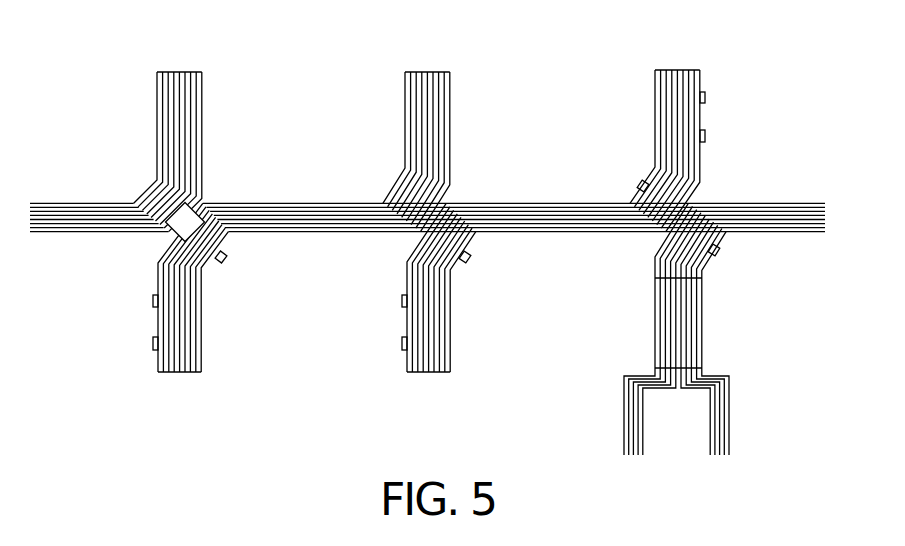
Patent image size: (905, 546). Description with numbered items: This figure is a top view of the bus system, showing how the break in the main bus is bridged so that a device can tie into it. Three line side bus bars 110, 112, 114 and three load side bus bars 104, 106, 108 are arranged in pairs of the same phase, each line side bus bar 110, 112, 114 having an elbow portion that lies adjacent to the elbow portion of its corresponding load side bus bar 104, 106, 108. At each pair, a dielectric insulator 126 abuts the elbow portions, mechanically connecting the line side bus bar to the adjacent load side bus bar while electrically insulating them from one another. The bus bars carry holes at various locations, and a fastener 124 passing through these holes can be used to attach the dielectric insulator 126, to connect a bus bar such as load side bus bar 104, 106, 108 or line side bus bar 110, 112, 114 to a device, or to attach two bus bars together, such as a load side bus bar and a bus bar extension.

The load side bus bar 104 is at (180, 374).
The load side bus bar 106 is at (418, 375).
The load side bus bar 108 is at (229, 258).
The line side bus bar 110 is at (202, 92).
The line side bus bar 112 is at (450, 92).
The line side bus bar 114 is at (655, 100).
The fastener 124 is at (705, 136).
The dielectric insulator 126 is at (190, 210).